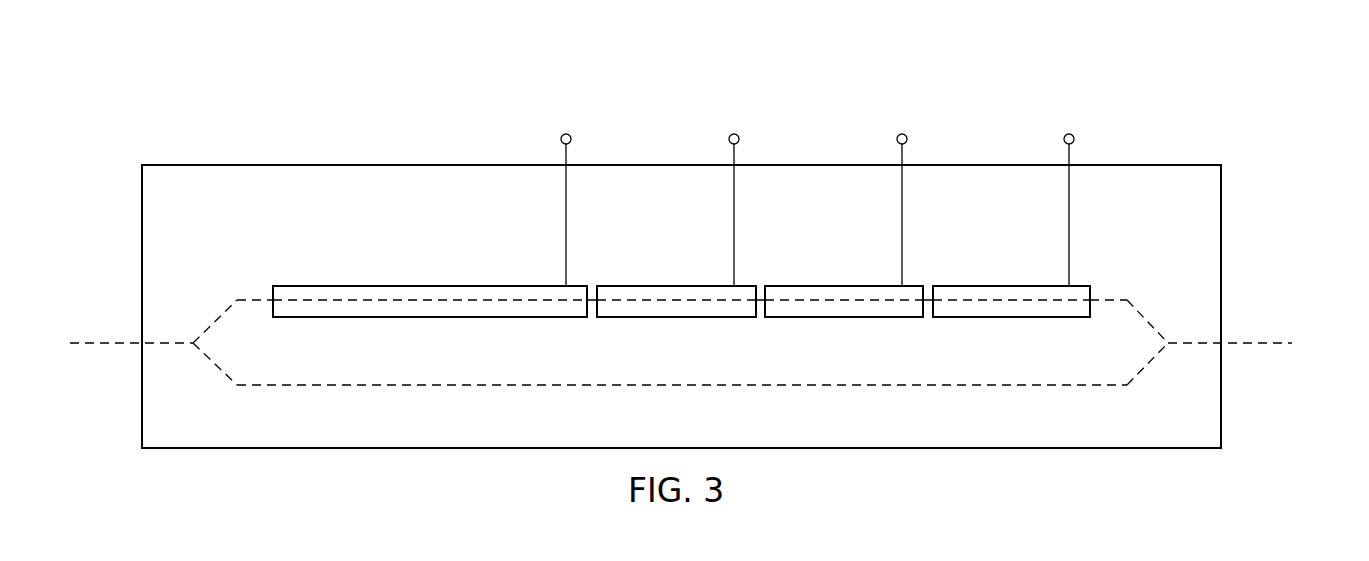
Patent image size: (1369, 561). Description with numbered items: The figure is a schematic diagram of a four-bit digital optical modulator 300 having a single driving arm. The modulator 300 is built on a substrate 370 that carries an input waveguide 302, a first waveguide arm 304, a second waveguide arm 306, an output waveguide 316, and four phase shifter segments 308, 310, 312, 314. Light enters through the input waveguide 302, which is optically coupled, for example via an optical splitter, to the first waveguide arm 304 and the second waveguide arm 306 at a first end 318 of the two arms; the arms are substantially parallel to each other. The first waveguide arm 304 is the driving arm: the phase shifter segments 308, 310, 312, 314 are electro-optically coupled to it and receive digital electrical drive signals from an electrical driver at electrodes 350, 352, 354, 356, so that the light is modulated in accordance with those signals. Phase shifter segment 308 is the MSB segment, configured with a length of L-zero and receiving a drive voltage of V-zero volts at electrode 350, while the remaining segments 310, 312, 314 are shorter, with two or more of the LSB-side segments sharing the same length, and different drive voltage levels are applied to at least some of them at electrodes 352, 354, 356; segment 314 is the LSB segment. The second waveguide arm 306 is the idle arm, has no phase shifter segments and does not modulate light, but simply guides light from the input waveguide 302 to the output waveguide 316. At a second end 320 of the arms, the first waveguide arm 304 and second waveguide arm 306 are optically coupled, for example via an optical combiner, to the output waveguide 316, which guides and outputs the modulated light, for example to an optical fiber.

The digital optical modulator 300 is at (222, 105).
The input waveguide 302 is at (108, 345).
The first waveguide arm 304 is at (237, 299).
The second waveguide arm 306 is at (237, 386).
The phase shifter segment 308 is at (330, 319).
The phase shifter segment 310 is at (630, 319).
The phase shifter segment 312 is at (892, 319).
The phase shifter segment 314 is at (1063, 319).
The output waveguide 316 is at (1243, 345).
The first end 318 is at (190, 340).
The second end 320 is at (1170, 339).
The electrode 350 is at (561, 135).
The electrode 352 is at (739, 135).
The electrode 354 is at (907, 135).
The electrode 356 is at (1074, 135).
The substrate 370 is at (322, 160).